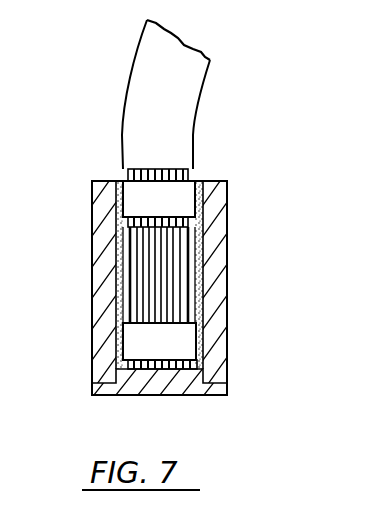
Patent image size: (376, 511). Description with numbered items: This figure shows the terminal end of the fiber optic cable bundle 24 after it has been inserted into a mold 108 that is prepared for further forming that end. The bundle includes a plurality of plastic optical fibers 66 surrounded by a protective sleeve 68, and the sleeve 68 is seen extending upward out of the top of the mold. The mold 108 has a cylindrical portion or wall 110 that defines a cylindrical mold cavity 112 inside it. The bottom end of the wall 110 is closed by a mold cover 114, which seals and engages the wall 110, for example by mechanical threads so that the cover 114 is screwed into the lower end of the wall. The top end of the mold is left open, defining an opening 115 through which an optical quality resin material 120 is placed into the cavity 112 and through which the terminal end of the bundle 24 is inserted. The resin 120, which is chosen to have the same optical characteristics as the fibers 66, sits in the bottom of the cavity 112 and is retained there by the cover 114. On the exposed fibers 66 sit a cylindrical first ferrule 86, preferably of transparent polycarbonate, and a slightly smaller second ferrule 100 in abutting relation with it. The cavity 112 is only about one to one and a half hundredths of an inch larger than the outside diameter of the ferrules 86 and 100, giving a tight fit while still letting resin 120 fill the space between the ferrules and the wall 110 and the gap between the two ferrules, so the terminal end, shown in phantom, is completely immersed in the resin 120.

The fiber optic cable bundle 24 is at (121, 53).
The protective sleeve 68 is at (188, 89).
The mold 108 is at (233, 178).
The cylindrical wall 110 is at (108, 290).
The mold cover 114 is at (172, 395).
The optical quality resin material 120 is at (124, 237).
The mold cavity 112 is at (190, 300).
The opening 115 is at (122, 180).
The first ferrule 86 is at (183, 199).
The plastic optical fibers 66 is at (172, 273).
The second ferrule 100 is at (131, 350).